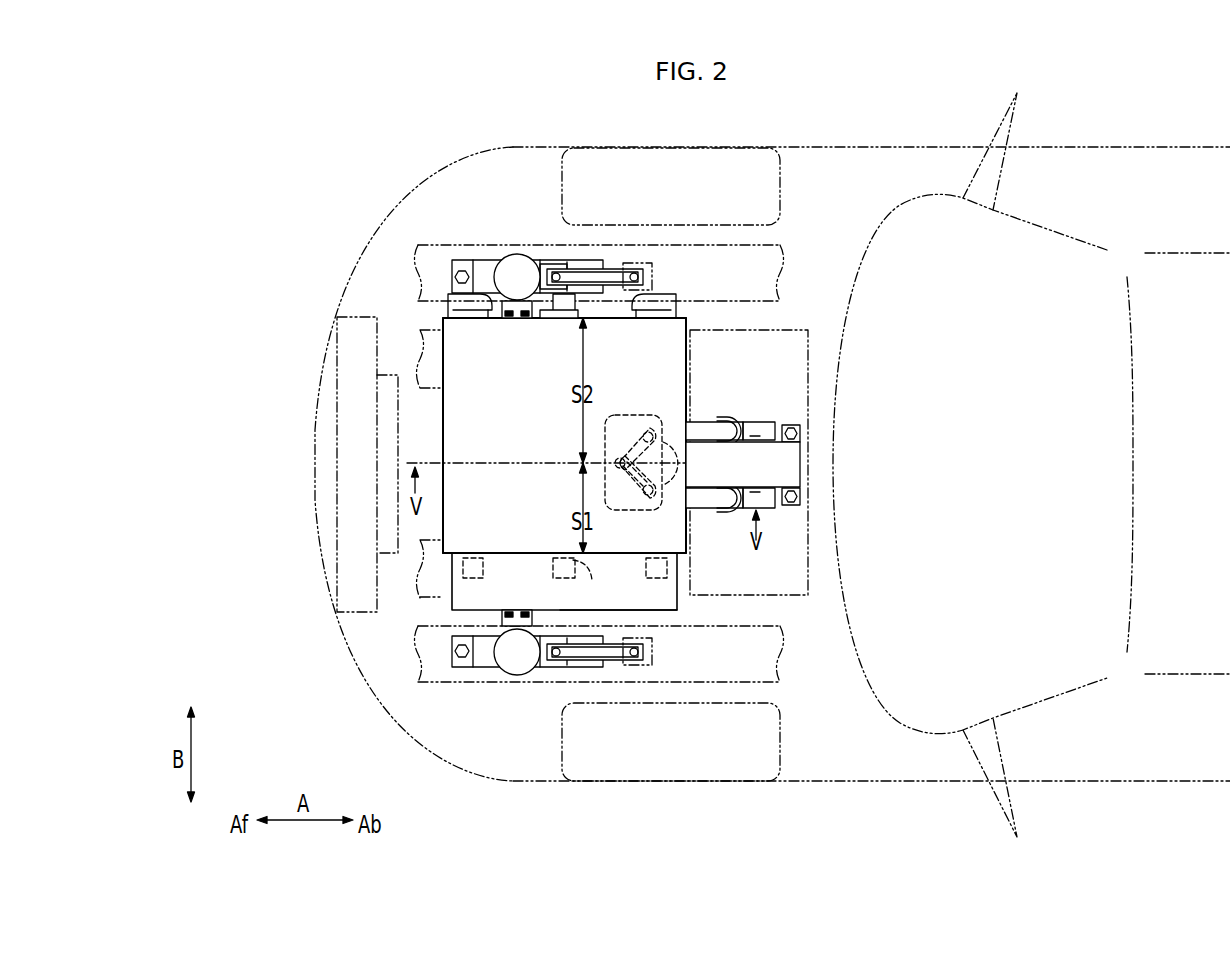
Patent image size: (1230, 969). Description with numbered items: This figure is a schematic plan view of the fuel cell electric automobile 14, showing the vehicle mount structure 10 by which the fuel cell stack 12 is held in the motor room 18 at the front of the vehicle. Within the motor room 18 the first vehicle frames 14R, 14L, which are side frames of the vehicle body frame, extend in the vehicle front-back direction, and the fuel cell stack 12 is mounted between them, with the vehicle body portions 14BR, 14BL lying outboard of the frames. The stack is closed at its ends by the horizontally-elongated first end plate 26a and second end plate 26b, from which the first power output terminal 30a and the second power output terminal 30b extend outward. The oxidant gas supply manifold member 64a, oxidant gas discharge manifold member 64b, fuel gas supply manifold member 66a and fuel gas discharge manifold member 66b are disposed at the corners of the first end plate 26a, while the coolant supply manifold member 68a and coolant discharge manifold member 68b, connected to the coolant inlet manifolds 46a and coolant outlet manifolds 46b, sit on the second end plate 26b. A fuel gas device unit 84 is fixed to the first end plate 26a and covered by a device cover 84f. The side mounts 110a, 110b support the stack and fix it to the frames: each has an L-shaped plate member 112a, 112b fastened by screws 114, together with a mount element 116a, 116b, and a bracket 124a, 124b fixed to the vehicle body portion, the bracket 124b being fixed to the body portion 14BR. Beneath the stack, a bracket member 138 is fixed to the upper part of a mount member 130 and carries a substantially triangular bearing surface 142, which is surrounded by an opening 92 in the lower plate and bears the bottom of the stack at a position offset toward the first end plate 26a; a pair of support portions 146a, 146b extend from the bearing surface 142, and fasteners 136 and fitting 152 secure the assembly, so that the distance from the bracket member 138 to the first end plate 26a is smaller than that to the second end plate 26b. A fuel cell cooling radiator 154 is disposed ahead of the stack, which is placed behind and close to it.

The vehicle mount structure 10 is at (305, 176).
The fuel cell stack 12 is at (434, 430).
The fuel cell electric automobile 14 is at (856, 138).
The first vehicle frame 14R is at (415, 252).
The first vehicle frame 14L is at (412, 684).
The vehicle body portion 14BR is at (647, 262).
The vehicle body portion 14BL is at (645, 668).
The motor room 18 is at (340, 292).
The first end plate 26a is at (496, 567).
The second end plate 26b is at (614, 303).
The first power output terminal 30a is at (581, 584).
The second power output terminal 30b is at (560, 310).
The coolant inlet manifold 46a is at (655, 305).
The coolant outlet manifold 46b is at (478, 307).
The oxidant gas supply manifold member 64a is at (723, 592).
The oxidant gas discharge manifold member 64b is at (473, 568).
The fuel gas supply manifold member 66a is at (667, 568).
The fuel gas discharge manifold member 66b is at (347, 588).
The coolant supply manifold member 68a is at (644, 328).
The coolant discharge manifold member 68b is at (490, 352).
The fuel gas device unit 84 is at (459, 604).
The device cover 84f is at (620, 600).
The opening 92 is at (605, 441).
The side mount 110a is at (502, 707).
The side mount 110b is at (492, 222).
The plate member 112a is at (517, 612).
The plate member 112b is at (517, 313).
The screws 114 is at (533, 262).
The first rubber mount 116a is at (530, 650).
The second rubber mount 116b is at (517, 258).
The bracket 124a is at (640, 654).
The bracket 124b is at (645, 272).
The mount member 130 is at (795, 468).
The fastening bolt 136 is at (770, 510).
The bracket member 138 is at (612, 490).
The bearing surface 142 is at (632, 425).
The support portion 146a is at (697, 428).
The support portion 146b is at (695, 507).
The clamp 152 is at (748, 430).
The fuel cell cooling radiator 154 is at (345, 490).